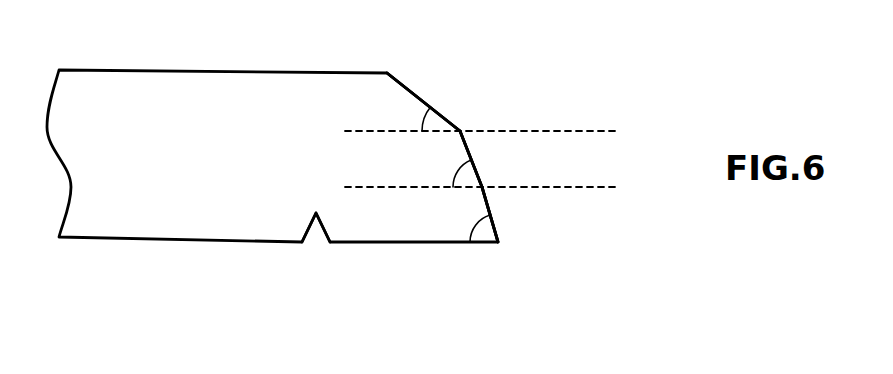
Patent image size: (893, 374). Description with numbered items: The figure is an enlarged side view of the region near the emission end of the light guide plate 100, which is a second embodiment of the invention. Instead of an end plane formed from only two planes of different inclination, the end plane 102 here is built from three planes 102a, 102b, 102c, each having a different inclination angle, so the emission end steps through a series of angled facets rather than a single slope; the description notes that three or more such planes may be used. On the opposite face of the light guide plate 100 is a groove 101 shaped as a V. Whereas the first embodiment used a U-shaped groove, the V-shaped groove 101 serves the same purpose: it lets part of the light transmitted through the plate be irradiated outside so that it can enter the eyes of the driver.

The light guide plate 100 is at (300, 71).
The V-shaped groove 101 is at (313, 237).
The end plane 102 is at (623, 75).
The first inclined plane 102a is at (415, 96).
The second inclined plane 102b is at (468, 149).
The third inclined plane 102c is at (493, 203).